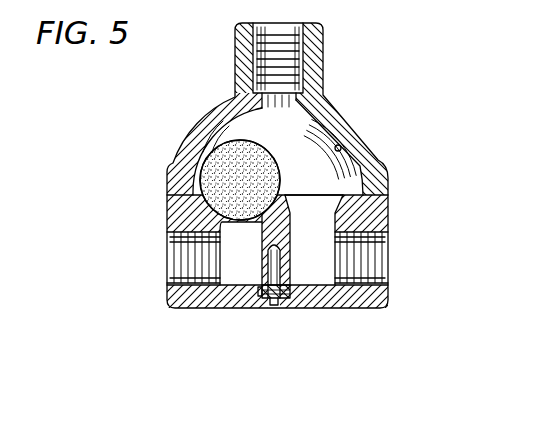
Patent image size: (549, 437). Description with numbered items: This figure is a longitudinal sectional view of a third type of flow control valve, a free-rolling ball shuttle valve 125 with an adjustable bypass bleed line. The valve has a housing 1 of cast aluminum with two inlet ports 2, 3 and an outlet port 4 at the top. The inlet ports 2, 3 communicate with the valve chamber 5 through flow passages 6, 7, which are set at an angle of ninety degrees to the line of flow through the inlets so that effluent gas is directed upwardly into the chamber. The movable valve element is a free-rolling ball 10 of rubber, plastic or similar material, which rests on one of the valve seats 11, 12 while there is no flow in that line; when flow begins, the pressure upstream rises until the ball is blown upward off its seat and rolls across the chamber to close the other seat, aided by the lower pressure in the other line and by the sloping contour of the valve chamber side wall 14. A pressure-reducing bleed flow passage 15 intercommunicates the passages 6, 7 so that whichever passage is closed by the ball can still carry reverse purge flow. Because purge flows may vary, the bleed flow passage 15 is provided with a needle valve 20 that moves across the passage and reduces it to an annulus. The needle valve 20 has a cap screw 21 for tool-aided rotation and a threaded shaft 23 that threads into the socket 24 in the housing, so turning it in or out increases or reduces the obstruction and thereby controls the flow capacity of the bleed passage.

The housing 1 is at (213, 112).
The inlet port 2 is at (167, 258).
The inlet port 3 is at (390, 252).
The outlet port 4 is at (296, 38).
The valve chamber 5 is at (301, 153).
The flow passage 6 is at (240, 290).
The flow passage 7 is at (320, 235).
The free-rolling ball 10 is at (215, 160).
The valve seat 11 is at (212, 200).
The valve seat 12 is at (345, 200).
The valve chamber side wall 14 is at (341, 146).
The bleed flow passage 15 is at (268, 262).
The needle valve 20 is at (287, 300).
The cap screw 21 is at (278, 300).
The threaded shaft 23 is at (293, 290).
The socket 24 is at (262, 300).
The free-rolling ball shuttle valve 125 is at (345, 107).